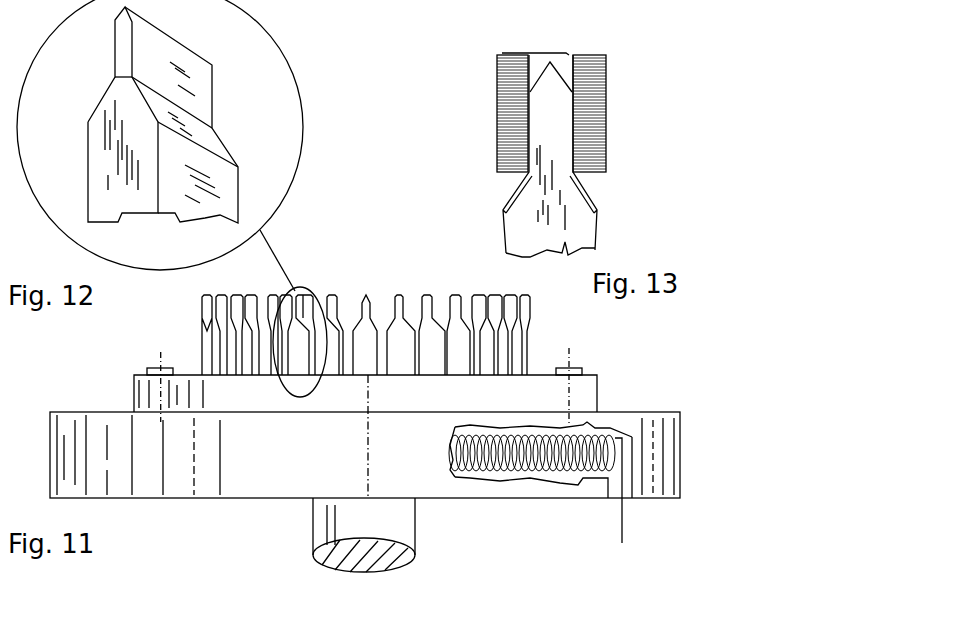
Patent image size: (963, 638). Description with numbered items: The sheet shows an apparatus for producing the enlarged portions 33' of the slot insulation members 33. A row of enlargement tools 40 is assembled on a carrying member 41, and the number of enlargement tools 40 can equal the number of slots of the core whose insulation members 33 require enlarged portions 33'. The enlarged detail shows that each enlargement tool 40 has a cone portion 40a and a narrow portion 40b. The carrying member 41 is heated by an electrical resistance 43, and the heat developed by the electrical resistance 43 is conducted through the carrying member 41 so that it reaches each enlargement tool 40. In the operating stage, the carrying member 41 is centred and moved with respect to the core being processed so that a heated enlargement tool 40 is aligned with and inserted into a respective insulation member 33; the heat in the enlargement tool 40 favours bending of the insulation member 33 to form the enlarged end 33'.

In FIG. 11, the enlargement tool 40 is at (215, 338).
In FIG. 12, the enlargement tool 40 is at (153, 115).
In FIG. 13, the enlargement tool 40 is at (563, 155).
In FIG. 12, the cone portion 40a is at (212, 142).
In FIG. 12, the narrow portion 40b is at (190, 90).
In FIG. 11, the carrying member 41 is at (625, 395).
In FIG. 11, the electrical resistance 43 is at (515, 460).
In FIG. 13, the insulation member 33 is at (537, 89).
In FIG. 13, the enlarged portion 33' is at (481, 179).